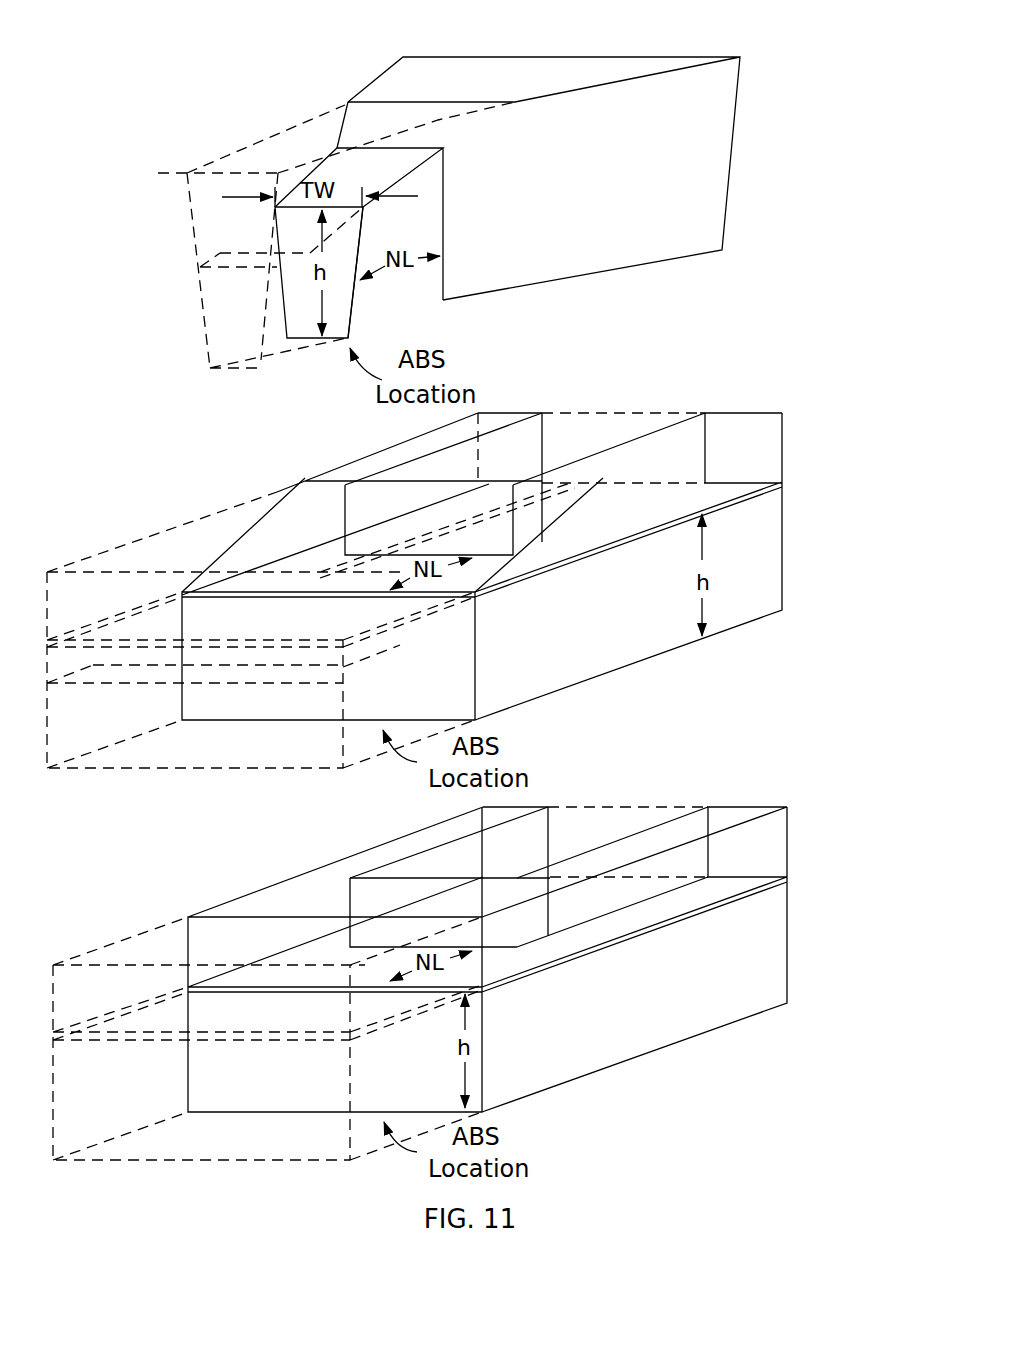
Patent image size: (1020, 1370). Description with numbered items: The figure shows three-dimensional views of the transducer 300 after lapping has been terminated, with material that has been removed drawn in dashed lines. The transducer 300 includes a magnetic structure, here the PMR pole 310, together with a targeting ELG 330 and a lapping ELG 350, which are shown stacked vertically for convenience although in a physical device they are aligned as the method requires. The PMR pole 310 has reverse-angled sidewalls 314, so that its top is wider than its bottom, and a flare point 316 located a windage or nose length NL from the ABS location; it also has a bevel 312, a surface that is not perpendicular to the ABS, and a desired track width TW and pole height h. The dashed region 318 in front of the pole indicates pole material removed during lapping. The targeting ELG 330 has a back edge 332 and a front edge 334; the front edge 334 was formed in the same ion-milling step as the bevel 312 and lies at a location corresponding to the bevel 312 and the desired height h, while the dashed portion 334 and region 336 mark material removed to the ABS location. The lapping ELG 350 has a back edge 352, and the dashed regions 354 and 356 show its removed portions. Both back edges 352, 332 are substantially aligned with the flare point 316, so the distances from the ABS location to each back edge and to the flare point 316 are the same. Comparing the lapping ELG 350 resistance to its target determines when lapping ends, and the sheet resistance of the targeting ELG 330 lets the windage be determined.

The transducer 300 is at (449, 33).
The PMR pole 310 is at (737, 100).
The bevel 312 is at (311, 150).
The sidewalls 314 is at (352, 300).
The flare point 316 is at (445, 298).
The portion of pole to be lapped 318 is at (290, 202).
The targeting ELG 330 is at (740, 480).
The back edge of the targeting ELG 332 is at (330, 565).
The front edge of the targeting ELG 334 is at (242, 597).
The trench bevel 336 is at (249, 590).
The lapping ELG 350 is at (765, 872).
The back edge of the lapping ELG 352 is at (333, 953).
The portion of insulator to be lapped 354 is at (245, 990).
The nonmagnetic layer in trench 356 is at (252, 982).